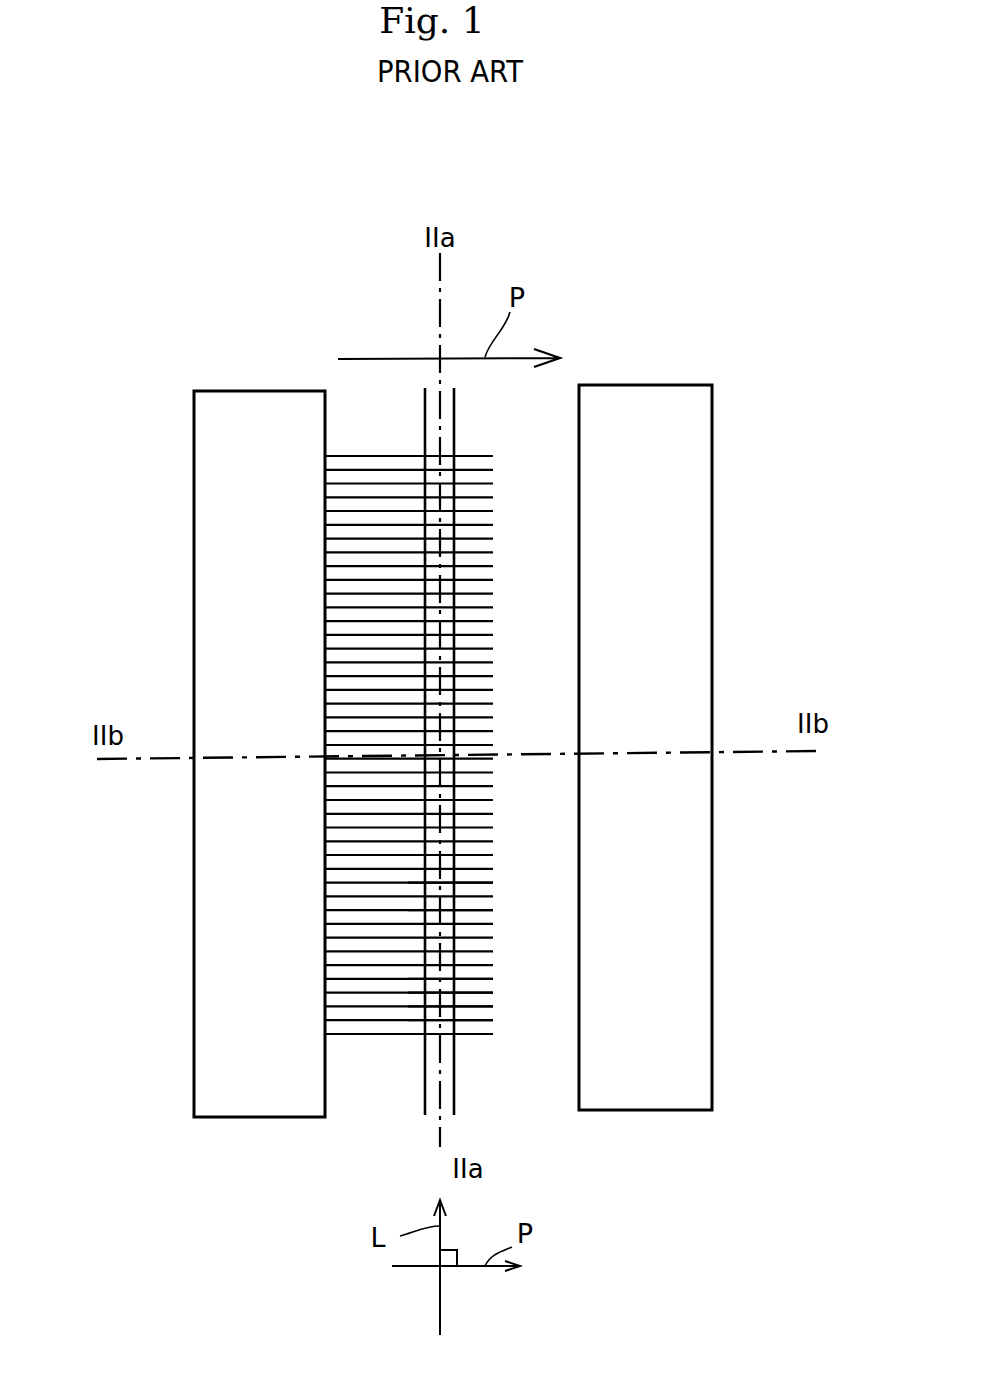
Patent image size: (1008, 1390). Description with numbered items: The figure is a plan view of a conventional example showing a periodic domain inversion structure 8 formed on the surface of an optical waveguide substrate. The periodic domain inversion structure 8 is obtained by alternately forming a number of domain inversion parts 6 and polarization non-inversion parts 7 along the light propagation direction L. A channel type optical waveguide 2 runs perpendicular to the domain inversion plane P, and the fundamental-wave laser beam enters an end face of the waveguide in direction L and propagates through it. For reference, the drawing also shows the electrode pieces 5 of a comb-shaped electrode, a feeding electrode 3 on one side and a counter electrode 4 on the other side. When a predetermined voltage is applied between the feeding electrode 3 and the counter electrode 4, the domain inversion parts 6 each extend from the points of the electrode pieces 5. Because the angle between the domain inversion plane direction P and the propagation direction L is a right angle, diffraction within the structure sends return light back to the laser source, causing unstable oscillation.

The channel type optical waveguide 2 is at (455, 410).
The feeding electrode 3 is at (243, 391).
The counter electrode 4 is at (700, 385).
The electrode pieces 5 is at (370, 456).
The domain inversion parts 6 is at (493, 980).
The polarization non-inversion parts 7 is at (494, 913).
The periodic domain inversion structure 8 is at (500, 462).